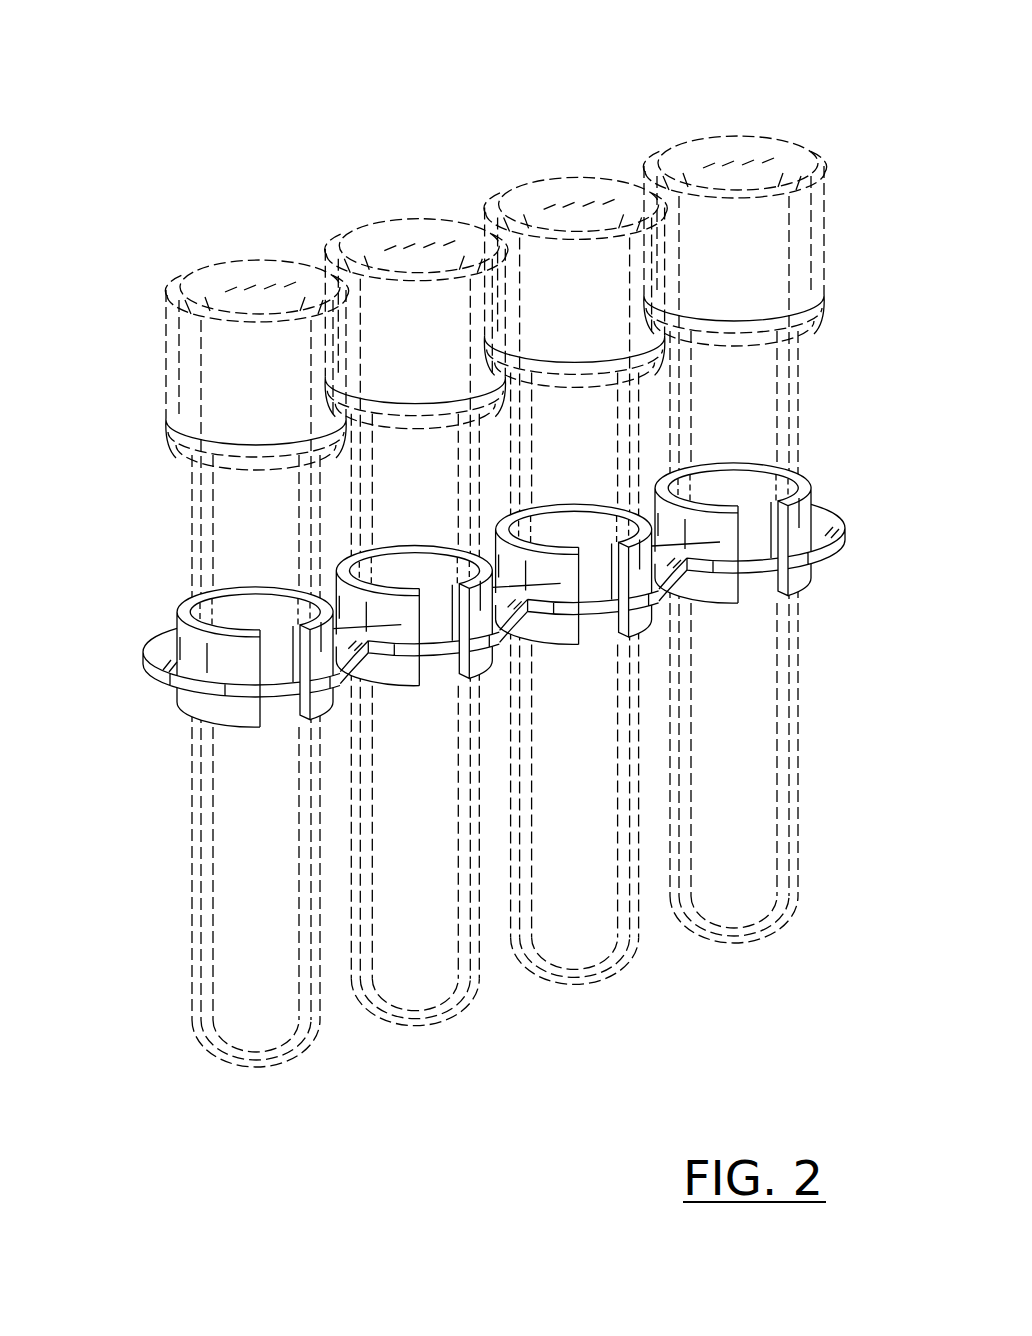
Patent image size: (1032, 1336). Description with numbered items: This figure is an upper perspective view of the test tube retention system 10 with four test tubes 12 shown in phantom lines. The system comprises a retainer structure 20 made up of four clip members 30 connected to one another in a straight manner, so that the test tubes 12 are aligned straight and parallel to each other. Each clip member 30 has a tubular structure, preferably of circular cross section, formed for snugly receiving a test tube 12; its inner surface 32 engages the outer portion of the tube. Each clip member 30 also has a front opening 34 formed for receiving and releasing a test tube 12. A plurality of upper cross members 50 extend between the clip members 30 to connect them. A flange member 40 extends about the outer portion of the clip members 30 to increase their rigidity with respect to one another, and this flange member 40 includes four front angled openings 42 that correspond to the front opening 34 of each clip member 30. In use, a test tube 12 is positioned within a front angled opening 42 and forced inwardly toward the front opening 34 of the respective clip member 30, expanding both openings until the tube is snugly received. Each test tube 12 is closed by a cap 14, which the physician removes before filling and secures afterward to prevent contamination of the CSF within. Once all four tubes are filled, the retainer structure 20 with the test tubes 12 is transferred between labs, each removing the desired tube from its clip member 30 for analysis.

The test tube retention system 10 is at (502, 541).
The test tube 12 is at (250, 886).
The cap 14 is at (193, 395).
The retainer structure 20 is at (502, 578).
The clip member 30 is at (163, 668).
The inner surface 32 is at (220, 612).
The front opening 34 is at (793, 593).
The flange member 40 is at (145, 668).
The front angled opening 42 is at (810, 558).
The upper cross member 50 is at (340, 600).